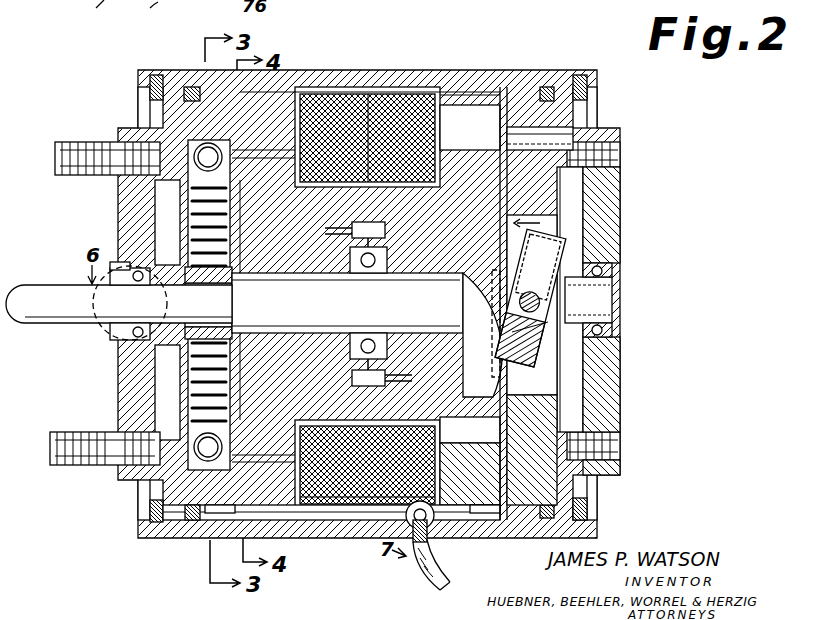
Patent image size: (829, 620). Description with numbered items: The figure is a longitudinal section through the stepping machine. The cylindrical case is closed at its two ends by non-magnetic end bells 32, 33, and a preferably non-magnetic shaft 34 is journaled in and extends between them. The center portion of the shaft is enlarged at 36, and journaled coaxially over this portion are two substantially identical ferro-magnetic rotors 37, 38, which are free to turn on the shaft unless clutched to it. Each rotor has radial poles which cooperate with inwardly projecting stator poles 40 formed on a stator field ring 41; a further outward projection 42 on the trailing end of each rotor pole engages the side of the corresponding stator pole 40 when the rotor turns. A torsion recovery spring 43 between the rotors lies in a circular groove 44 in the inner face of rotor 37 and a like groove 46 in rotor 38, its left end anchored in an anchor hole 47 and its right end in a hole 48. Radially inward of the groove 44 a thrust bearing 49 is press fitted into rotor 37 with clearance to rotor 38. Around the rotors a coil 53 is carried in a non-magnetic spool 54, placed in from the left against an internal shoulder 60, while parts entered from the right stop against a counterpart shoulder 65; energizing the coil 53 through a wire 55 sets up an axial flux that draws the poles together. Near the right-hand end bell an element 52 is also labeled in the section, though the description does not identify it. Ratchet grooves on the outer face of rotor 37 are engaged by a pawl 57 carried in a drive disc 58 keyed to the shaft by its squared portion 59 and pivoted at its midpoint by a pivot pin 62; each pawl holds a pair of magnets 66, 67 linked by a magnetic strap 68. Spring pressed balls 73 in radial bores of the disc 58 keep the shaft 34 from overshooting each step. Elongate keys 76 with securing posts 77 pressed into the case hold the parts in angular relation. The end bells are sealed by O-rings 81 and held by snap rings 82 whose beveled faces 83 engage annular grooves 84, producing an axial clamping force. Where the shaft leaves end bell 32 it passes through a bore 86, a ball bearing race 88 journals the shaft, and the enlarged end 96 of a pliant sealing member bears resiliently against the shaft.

The end bell 32 is at (135, 385).
The end bell 33 is at (612, 196).
The shaft 34 is at (56, 324).
The enlarged center portion of the shaft 36 is at (367, 333).
The rotor 37 is at (300, 245).
The rotor 38 is at (548, 172).
The stator pole 40 is at (490, 432).
The stator field ring 41 is at (300, 90).
The outward projection 42 is at (262, 151).
The torsion recovery spring 43 is at (316, 470).
The circular groove 44 is at (346, 228).
The groove 46 is at (376, 262).
The anchor hole 47 is at (380, 125).
The hole 48 is at (372, 390).
The thrust bearing 49 is at (364, 336).
The end ring 52 is at (592, 104).
The coil 53 is at (438, 92).
The spool 54 is at (302, 500).
The wire 55 is at (440, 576).
The pawl 57 is at (185, 245).
The drive disc 58 is at (192, 360).
The squared portion of the shaft 59 is at (236, 293).
The internal shoulder 60 is at (302, 96).
The pivot pin 62 is at (218, 318).
The counterpart shoulder 65 is at (466, 92).
The magnet 66 is at (545, 242).
The magnet 67 is at (545, 354).
The magnetic strap 68 is at (572, 320).
The spring pressed ball 73 is at (218, 160).
The elongate key 76 is at (212, 515).
The securing post 77 is at (245, 518).
The O-ring 81 is at (193, 87).
The snap ring 82 is at (152, 88).
The bevel 83 is at (90, 15).
The annular groove 84 is at (165, 14).
The bore 86 is at (110, 284).
The ball bearing race 88 is at (138, 336).
The inwardly enlarged end of the tubular portion 96 is at (120, 283).